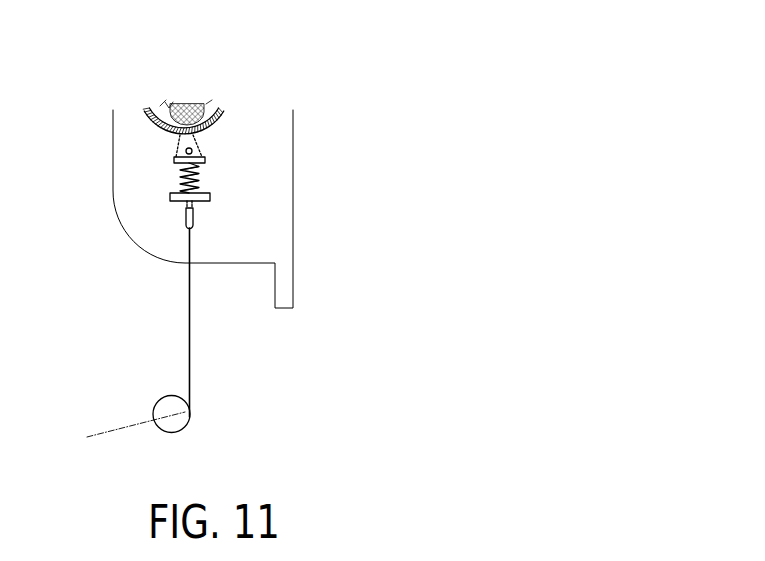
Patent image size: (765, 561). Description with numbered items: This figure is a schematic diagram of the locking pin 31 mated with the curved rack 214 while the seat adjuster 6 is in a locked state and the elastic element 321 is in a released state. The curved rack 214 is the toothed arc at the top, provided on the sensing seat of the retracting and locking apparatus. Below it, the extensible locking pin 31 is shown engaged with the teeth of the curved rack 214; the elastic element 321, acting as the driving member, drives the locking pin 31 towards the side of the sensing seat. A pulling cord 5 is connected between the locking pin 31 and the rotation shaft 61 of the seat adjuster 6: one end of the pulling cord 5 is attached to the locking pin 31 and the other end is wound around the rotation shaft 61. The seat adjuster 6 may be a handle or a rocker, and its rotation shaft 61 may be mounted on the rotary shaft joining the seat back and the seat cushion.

The curved rack 214 is at (213, 120).
The elastic element 321 is at (192, 173).
The locking pin 31 is at (190, 207).
The pulling cord 5 is at (185, 299).
The rotation shaft 61 is at (165, 400).
The seat adjuster 6 is at (132, 419).